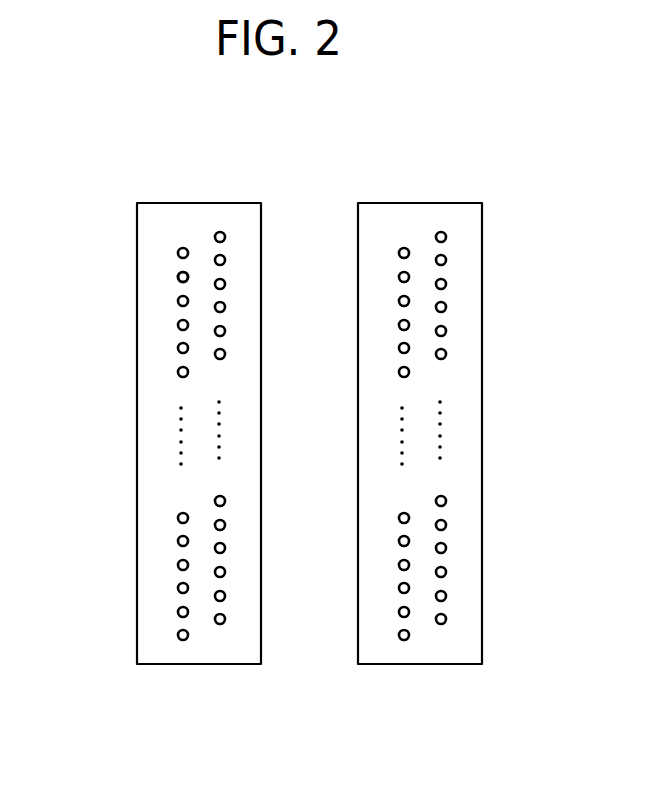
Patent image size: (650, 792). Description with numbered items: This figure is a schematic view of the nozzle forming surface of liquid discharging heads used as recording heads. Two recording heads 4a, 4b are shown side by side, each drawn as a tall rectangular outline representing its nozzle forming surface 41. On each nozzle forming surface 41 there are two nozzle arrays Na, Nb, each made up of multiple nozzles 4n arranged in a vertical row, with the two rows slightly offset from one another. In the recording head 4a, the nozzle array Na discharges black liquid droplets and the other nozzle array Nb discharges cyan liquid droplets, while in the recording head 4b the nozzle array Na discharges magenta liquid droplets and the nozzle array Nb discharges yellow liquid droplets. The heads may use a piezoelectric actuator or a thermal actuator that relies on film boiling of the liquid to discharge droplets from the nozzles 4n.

The recording head 4a is at (229, 190).
The recording head 4b is at (449, 190).
The nozzle 4n is at (176, 277).
The nozzle forming surface 41 is at (150, 408).
The nozzle array Na is at (180, 650).
The nozzle array Nb is at (223, 636).